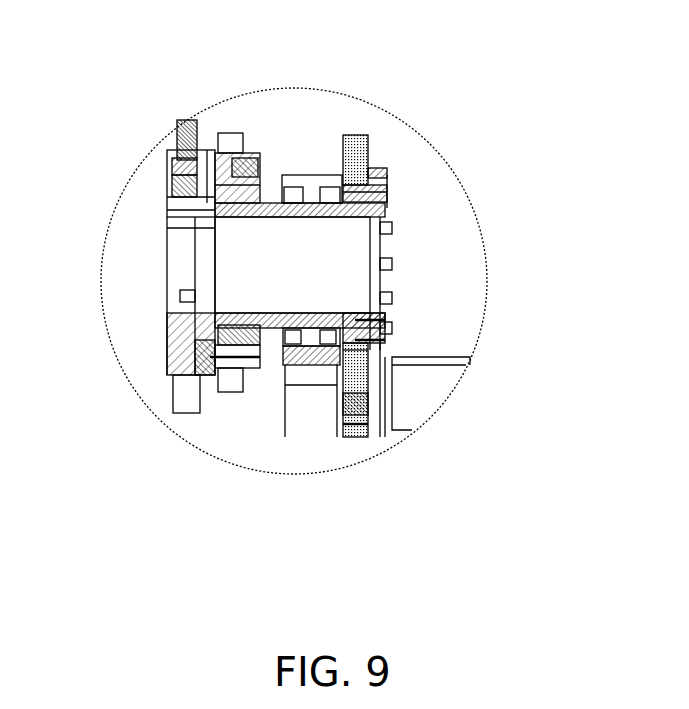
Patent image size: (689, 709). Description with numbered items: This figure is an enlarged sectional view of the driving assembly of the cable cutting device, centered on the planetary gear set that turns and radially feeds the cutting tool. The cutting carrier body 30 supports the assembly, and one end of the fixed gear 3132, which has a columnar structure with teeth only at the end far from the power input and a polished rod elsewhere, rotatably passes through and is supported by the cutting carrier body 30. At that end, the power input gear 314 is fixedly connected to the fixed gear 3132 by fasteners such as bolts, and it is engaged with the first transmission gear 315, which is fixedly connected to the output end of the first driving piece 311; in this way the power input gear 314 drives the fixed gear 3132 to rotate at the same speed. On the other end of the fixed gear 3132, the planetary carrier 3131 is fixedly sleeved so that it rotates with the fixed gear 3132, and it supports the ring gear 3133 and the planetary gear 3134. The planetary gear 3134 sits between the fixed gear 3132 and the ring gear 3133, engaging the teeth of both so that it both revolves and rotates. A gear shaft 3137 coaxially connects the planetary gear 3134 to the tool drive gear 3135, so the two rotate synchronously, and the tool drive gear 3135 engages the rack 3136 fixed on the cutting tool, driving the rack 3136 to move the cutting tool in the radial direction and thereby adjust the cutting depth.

The cutting carrier body 30 is at (310, 423).
The first driving piece 311 is at (418, 393).
The power input gear 314 is at (355, 158).
The first transmission gear 315 is at (367, 437).
The planetary carrier 3131 is at (208, 368).
The fixed gear 3132 is at (277, 318).
The ring gear 3133 is at (235, 137).
The planetary gear 3134 is at (232, 167).
The tool drive gear 3135 is at (185, 187).
The rack 3136 is at (180, 120).
The gear shaft 3137 is at (207, 172).